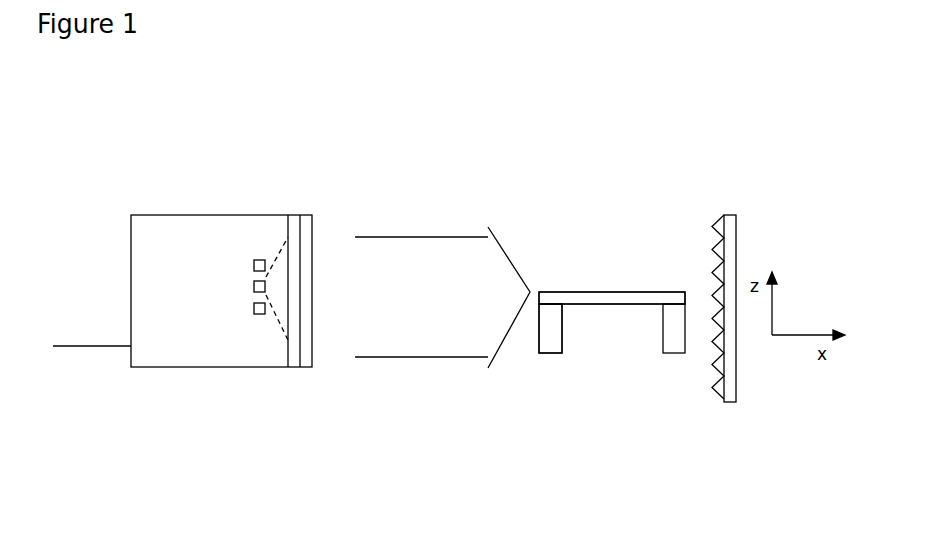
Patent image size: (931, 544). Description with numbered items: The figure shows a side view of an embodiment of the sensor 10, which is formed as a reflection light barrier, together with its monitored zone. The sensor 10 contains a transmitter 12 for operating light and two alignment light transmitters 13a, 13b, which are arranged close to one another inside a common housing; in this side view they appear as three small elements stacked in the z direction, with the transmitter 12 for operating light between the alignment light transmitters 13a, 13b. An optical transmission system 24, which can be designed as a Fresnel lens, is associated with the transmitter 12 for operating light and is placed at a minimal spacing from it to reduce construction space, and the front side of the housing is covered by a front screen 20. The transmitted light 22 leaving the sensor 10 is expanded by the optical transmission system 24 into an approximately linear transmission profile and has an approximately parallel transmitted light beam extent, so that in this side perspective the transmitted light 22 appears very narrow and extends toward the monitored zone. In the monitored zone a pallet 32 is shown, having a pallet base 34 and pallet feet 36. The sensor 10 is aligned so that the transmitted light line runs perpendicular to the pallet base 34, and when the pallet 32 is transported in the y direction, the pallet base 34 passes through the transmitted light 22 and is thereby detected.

The sensor 10 is at (182, 244).
The transmitter for operating light 12 is at (254, 285).
The alignment light transmitter 13a is at (254, 262).
The alignment light transmitter 13b is at (254, 309).
The front screen 20 is at (306, 358).
The transmitted light 22 is at (423, 345).
The optical transmission system 24 is at (293, 358).
The pallet 32 is at (570, 278).
The pallet base 34 is at (642, 300).
The pallet feet 36 is at (550, 342).